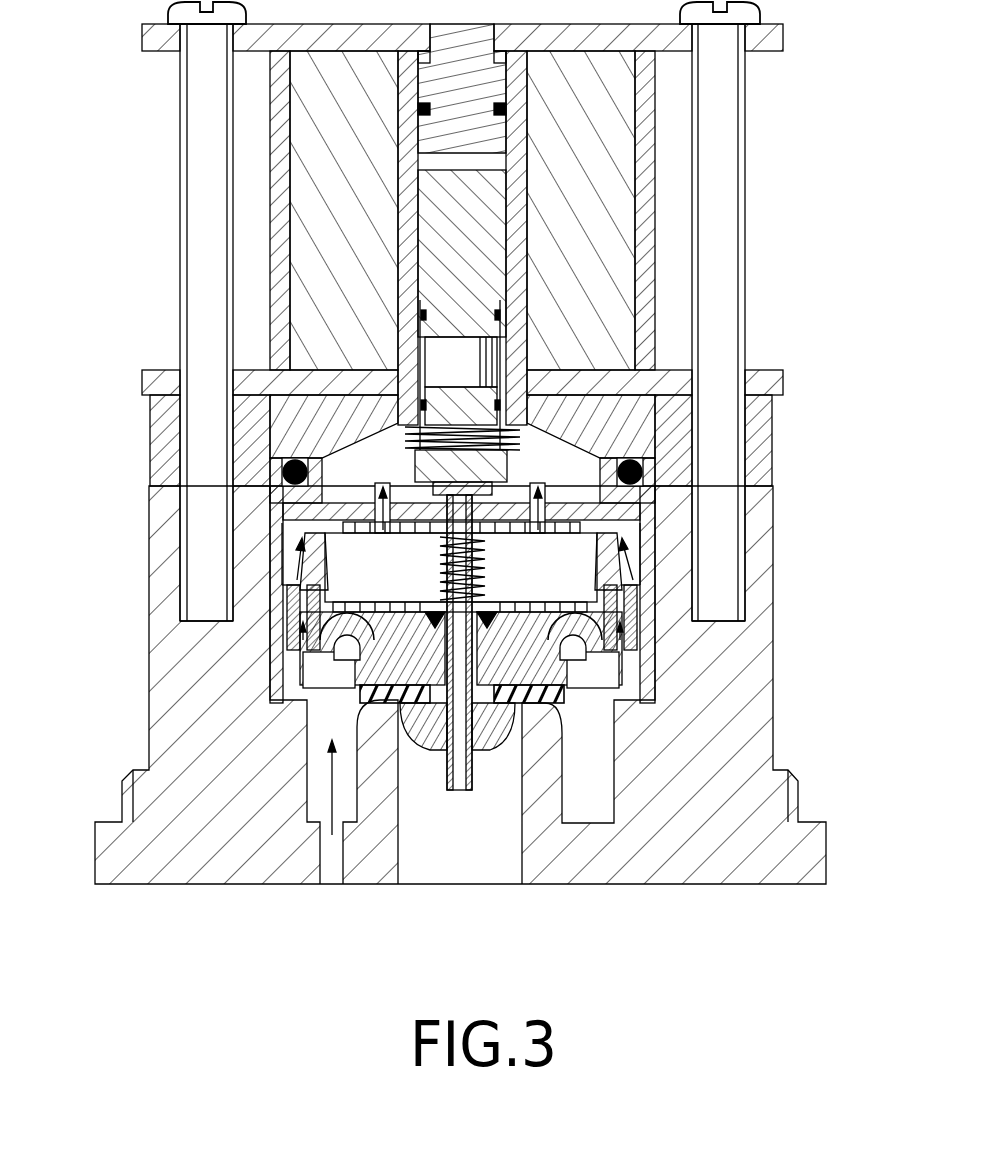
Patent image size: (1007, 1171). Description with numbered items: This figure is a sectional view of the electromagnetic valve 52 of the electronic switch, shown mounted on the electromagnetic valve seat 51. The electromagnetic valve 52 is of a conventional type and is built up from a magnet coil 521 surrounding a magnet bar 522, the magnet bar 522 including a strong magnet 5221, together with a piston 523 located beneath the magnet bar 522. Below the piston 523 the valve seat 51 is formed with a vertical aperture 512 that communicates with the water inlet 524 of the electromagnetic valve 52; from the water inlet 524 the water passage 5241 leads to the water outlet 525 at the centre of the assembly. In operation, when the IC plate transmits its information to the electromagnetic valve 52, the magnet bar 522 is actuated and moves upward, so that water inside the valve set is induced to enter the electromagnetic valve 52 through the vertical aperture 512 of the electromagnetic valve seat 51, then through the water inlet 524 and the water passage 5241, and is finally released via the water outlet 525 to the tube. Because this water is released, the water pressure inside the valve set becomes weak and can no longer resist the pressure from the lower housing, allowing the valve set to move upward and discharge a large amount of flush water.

The electromagnetic valve seat 51 is at (195, 705).
The vertical aperture 512 is at (330, 858).
The electromagnetic valve 52 is at (788, 252).
The magnet coil 521 is at (570, 162).
The magnet bar 522 is at (527, 392).
The strong magnet 5221 is at (475, 360).
The piston 523 is at (595, 494).
The water inlet 524 is at (287, 608).
The water passage 5241 is at (270, 513).
The water outlet 525 is at (458, 775).